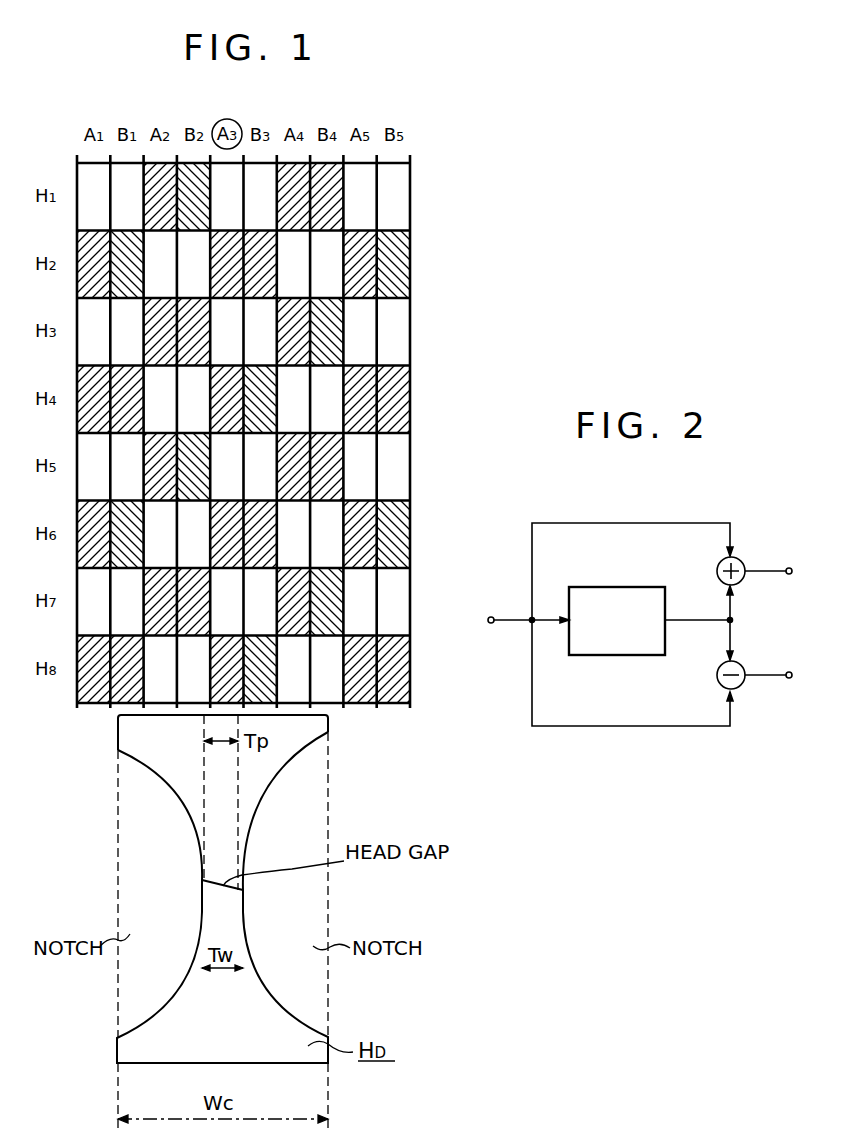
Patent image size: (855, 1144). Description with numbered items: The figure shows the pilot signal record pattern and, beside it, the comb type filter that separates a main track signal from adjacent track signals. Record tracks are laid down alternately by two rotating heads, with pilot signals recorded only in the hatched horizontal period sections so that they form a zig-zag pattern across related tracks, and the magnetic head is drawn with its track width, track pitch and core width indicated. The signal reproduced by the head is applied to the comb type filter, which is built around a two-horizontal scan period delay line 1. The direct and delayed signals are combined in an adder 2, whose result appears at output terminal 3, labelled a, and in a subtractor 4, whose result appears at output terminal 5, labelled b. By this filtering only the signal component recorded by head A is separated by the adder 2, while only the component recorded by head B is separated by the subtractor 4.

The two-horizontal scan period delay line 1 is at (637, 596).
The adder 2 is at (718, 566).
The output terminal of the adder 3 is at (789, 568).
The subtractor 4 is at (718, 671).
The output terminal of the subtractor 5 is at (789, 678).
The output a is at (797, 583).
The output b is at (797, 660).